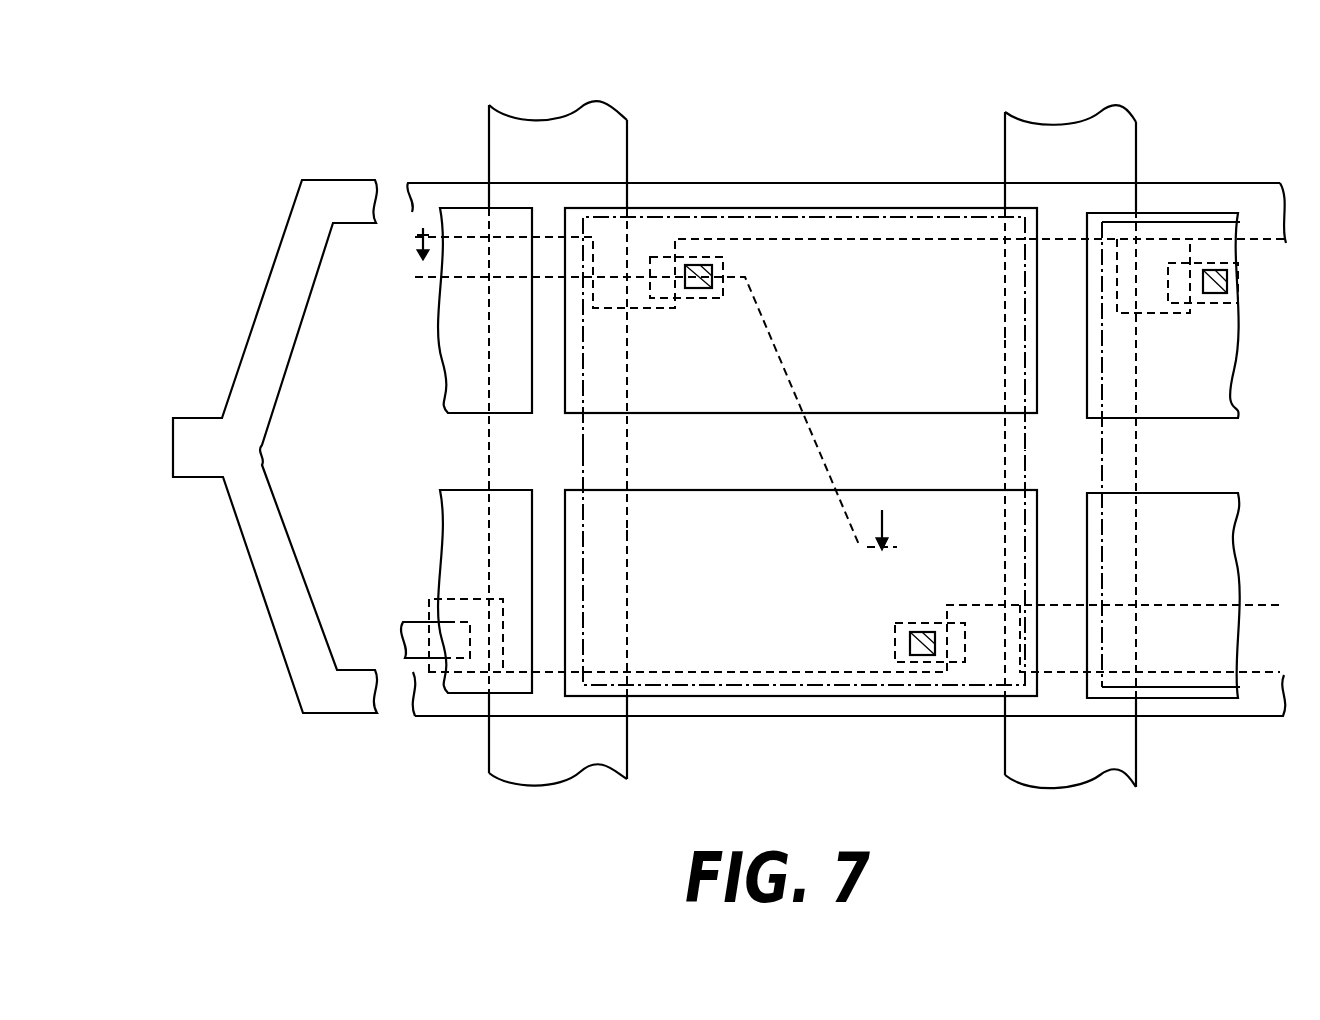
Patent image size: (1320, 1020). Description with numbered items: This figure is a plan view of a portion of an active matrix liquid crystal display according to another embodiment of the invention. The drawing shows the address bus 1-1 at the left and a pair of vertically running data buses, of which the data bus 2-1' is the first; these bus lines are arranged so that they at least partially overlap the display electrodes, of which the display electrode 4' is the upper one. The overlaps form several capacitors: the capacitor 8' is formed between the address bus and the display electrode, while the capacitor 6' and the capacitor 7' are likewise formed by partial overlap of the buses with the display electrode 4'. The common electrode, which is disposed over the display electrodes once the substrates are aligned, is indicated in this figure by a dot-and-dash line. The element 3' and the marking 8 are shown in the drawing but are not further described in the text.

The address bus 1-1 is at (200, 455).
The data bus 2-1' is at (569, 411).
The source electrode wiring 3' is at (851, 218).
The display electrode 4' is at (801, 275).
The capacitor C'ds 6' is at (919, 317).
The capacitor C'gs 7' is at (804, 284).
The section line 8 is at (653, 387).
The capacitor C'ad 8' is at (961, 314).